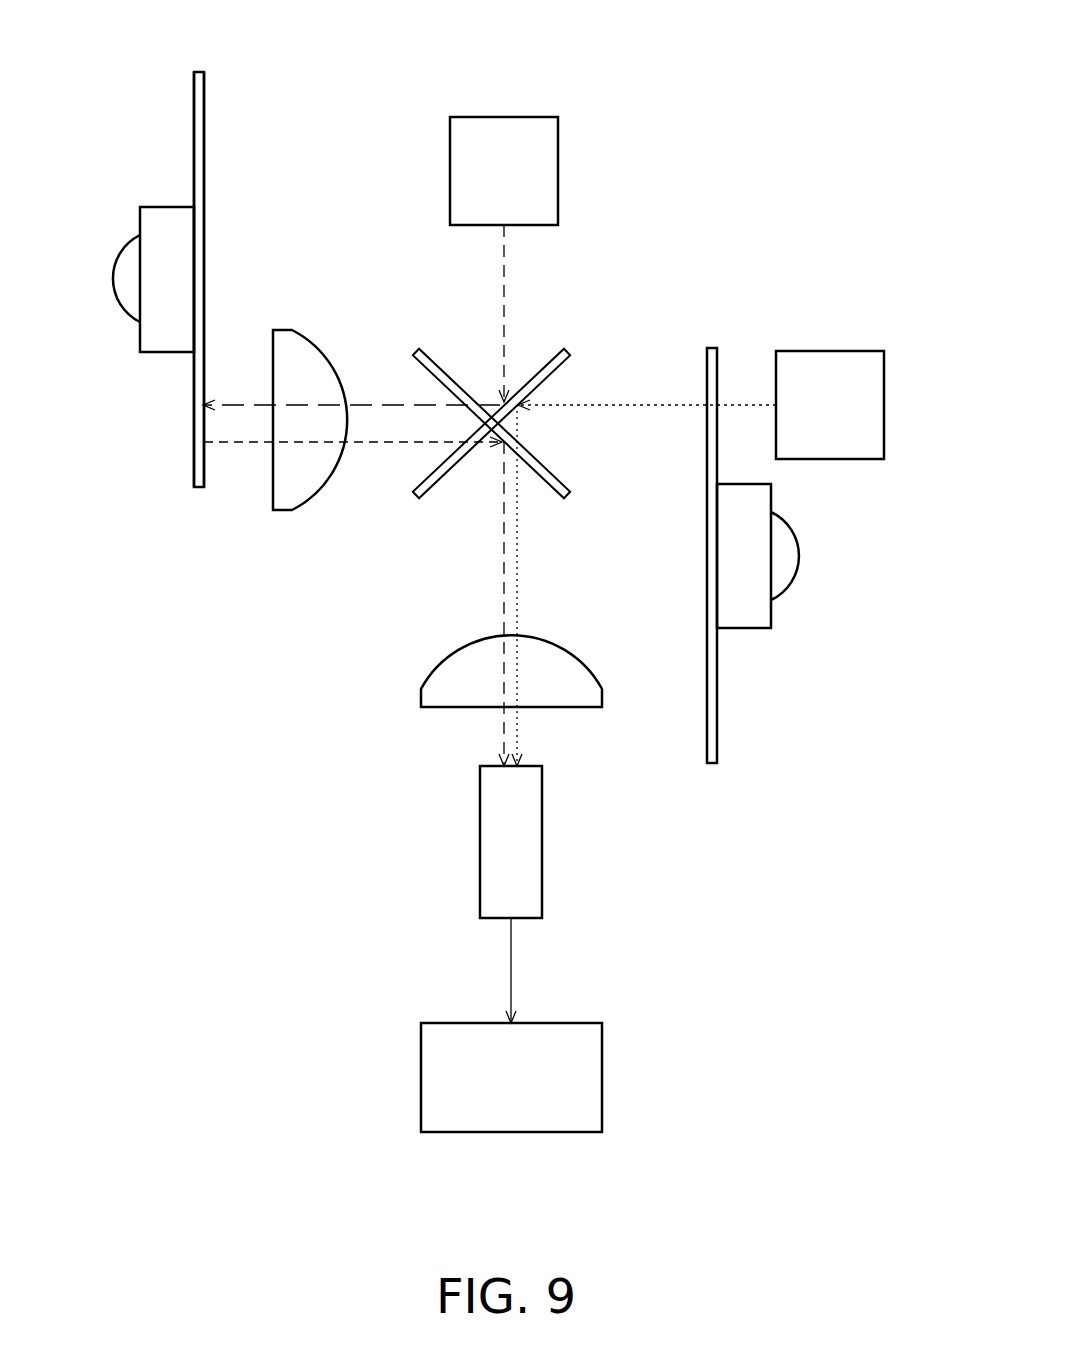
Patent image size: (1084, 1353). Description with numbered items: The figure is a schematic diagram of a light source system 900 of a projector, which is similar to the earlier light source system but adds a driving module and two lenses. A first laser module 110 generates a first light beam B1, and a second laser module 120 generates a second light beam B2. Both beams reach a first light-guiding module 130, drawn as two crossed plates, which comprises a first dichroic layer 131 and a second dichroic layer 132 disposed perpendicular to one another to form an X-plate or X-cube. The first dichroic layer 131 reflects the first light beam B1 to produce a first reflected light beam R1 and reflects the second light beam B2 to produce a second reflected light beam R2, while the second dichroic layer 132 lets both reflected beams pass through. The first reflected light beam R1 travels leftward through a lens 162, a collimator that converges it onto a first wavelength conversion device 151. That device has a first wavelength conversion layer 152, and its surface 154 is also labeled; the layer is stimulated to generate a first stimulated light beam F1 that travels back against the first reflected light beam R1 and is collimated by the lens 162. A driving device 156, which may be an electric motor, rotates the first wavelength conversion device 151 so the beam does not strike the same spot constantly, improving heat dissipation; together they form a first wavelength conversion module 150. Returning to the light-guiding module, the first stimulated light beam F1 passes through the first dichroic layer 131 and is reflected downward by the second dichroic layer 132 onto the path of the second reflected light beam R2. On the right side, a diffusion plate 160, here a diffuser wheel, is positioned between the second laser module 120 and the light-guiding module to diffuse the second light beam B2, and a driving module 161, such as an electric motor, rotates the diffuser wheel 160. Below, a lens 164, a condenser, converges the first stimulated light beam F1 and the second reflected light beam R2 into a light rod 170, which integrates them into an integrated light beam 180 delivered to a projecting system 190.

The light source system 900 is at (783, 60).
The first laser module 110 is at (560, 172).
The second laser module 120 is at (827, 350).
The first light-guiding module 130 is at (492, 386).
The first dichroic layer 131 is at (567, 350).
The second dichroic layer 132 is at (418, 353).
The first wavelength conversion module 150 is at (180, 271).
The first wavelength conversion device 151 is at (202, 70).
The first wavelength conversion layer 152 is at (202, 462).
The second surface 154 is at (195, 463).
The driving device 156 is at (165, 218).
The diffusion plate 160 is at (753, 530).
The driving module 161 is at (747, 617).
The lens 162 is at (283, 328).
The lens 164 is at (421, 694).
The light rod 170 is at (542, 840).
The integrated light beam 180 is at (513, 957).
The projecting system 190 is at (603, 1077).
The first light beam B1 is at (505, 250).
The second light beam B2 is at (625, 408).
The first reflected light beam R1 is at (365, 402).
The second reflected light beam R2 is at (517, 530).
The first stimulated light beam F1 is at (373, 443).